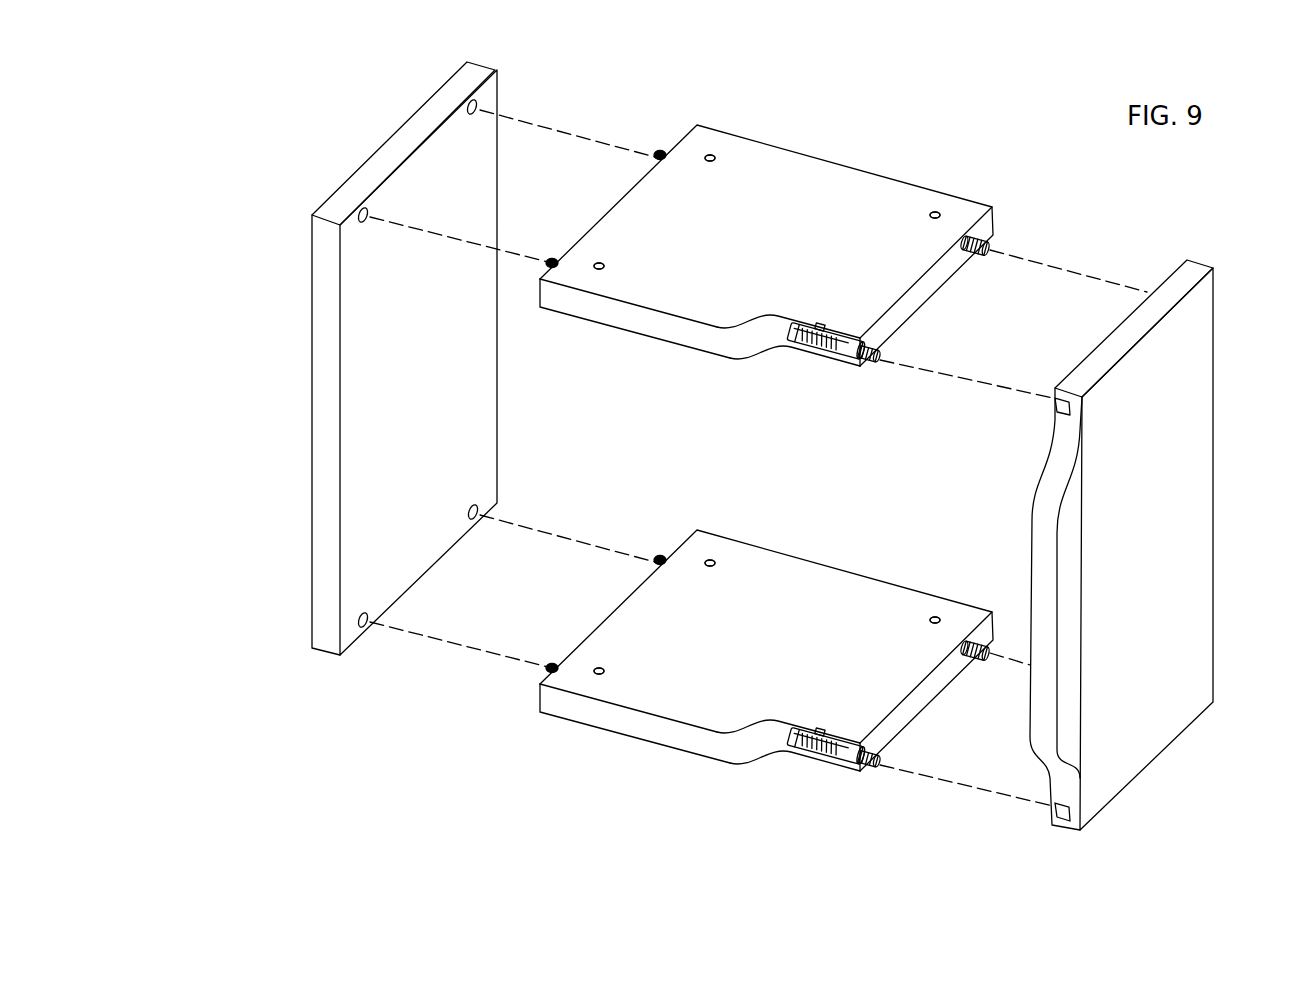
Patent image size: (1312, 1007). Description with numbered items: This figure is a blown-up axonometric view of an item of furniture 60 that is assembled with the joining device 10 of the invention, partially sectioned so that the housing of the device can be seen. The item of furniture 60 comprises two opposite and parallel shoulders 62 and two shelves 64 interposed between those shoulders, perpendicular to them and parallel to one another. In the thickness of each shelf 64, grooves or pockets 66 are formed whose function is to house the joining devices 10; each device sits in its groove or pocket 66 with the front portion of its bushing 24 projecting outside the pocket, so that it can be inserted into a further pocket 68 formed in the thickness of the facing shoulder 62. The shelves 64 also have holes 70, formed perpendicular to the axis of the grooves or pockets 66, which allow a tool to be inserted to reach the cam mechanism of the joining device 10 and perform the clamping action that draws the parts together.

The joining device 10 is at (803, 363).
The bushing 24 is at (655, 152).
The item of furniture 60 is at (385, 360).
The shoulder 62 is at (1152, 575).
The shelf 64 is at (800, 215).
The groove or pocket 66 is at (793, 343).
The further pocket 68 is at (480, 104).
The hole 70 is at (714, 155).